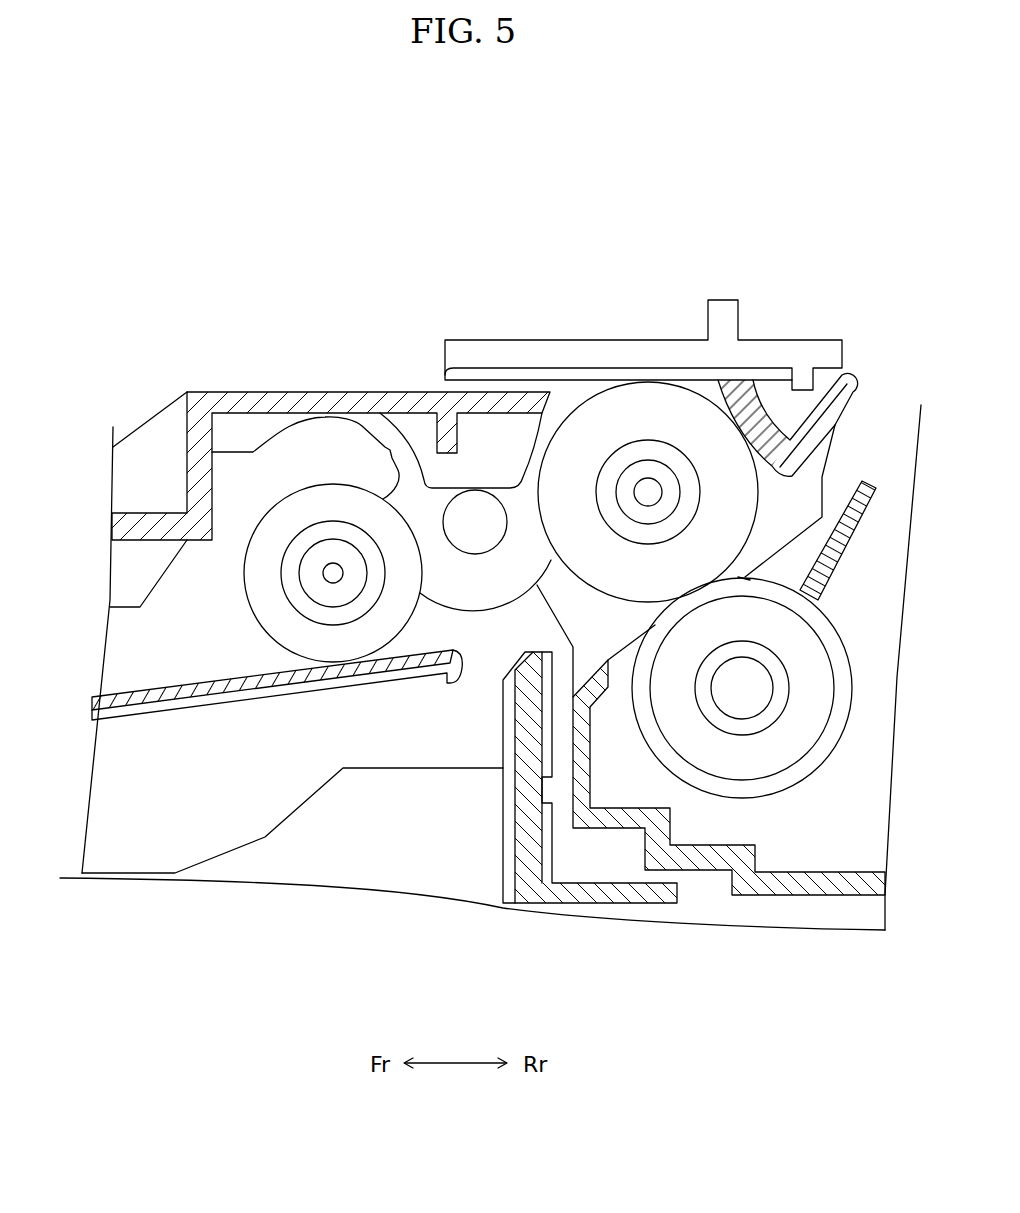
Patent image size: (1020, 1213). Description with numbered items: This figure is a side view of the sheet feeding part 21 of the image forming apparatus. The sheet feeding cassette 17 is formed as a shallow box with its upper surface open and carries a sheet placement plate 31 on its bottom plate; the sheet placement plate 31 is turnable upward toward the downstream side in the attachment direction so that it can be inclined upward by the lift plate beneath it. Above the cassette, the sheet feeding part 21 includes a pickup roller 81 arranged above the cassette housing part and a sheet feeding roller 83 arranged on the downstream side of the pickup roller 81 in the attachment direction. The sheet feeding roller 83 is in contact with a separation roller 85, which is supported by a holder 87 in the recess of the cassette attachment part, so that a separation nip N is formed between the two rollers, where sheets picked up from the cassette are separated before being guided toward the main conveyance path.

The sheet feeding part 21 is at (370, 323).
The sheet feeding roller 83 is at (610, 440).
The pickup roller 81 is at (243, 590).
The separation roller 85 is at (805, 662).
The separation nip N is at (707, 582).
The sheet placement plate 31 is at (185, 708).
The sheet feeding cassette 17 is at (527, 897).
The holder 87 is at (830, 888).